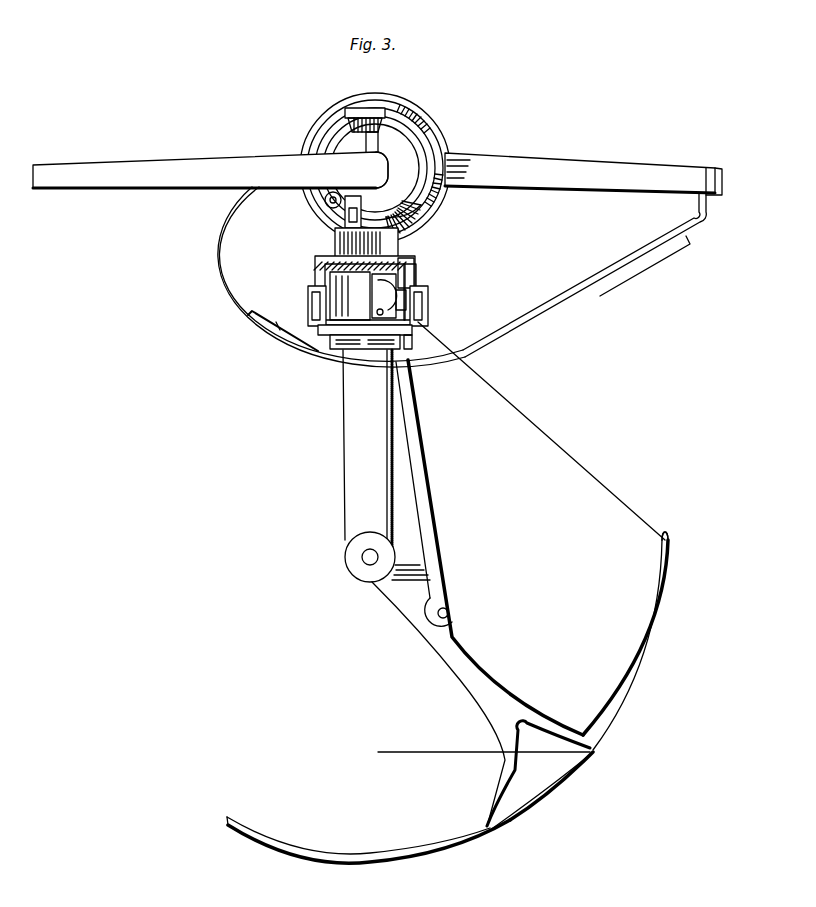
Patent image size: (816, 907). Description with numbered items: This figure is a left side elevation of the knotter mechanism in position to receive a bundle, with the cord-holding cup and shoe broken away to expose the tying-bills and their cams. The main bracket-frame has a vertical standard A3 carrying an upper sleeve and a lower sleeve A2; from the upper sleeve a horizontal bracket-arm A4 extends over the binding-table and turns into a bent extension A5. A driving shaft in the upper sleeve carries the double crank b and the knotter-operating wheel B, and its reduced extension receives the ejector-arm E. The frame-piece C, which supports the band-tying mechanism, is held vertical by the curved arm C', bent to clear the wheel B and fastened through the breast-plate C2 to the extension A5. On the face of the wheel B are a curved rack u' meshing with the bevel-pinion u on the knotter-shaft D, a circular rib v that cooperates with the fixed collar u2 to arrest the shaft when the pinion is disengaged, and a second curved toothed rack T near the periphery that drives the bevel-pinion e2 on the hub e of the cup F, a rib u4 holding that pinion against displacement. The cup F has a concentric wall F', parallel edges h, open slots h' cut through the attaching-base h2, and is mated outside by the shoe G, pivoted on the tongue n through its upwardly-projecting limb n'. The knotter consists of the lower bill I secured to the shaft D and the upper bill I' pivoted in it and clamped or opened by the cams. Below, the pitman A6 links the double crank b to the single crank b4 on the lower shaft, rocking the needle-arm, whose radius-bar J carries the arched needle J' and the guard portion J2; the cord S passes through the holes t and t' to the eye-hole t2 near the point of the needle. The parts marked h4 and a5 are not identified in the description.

The curved toothed rack T is at (417, 118).
The circular projecting rib v is at (328, 135).
The bevel-pinion u is at (365, 159).
The curved rack u' is at (397, 173).
The knotter-operating wheel B is at (436, 224).
The fixed collar u2 is at (378, 110).
The frame-piece C is at (382, 141).
The ejector-arm E is at (210, 170).
The knotter-shaft D is at (358, 170).
The horizontal bracket-arm A4 is at (580, 173).
The bent extension A5 is at (722, 190).
The double crank b is at (396, 178).
The rib u4 is at (323, 201).
The upwardly-projecting limb n' is at (329, 212).
The bevel-pinion e2 is at (338, 248).
The tongue n is at (342, 239).
The shoe G is at (318, 264).
The upper bill I' is at (350, 296).
The parallel edges h is at (383, 292).
The hub e is at (402, 252).
The cup F is at (437, 279).
The open slots h' is at (421, 286).
The concentric wall F' is at (433, 306).
The lug h4 is at (312, 330).
The lower bill I is at (365, 337).
The attaching-base h2 is at (412, 324).
The curved arm C' is at (325, 277).
The breast-plate C2 is at (596, 290).
The vertical standard A3 is at (367, 455).
The pitman A6 is at (426, 470).
The single crank b4 is at (448, 604).
The lower sleeve A2 is at (352, 567).
The pivot pin a5 is at (368, 562).
The cord S is at (548, 428).
The radius-bar J is at (438, 702).
The hole t is at (538, 773).
The hole t' is at (554, 790).
The needle J' is at (589, 676).
The eye-hole t2 is at (670, 543).
The guard J2 is at (402, 852).